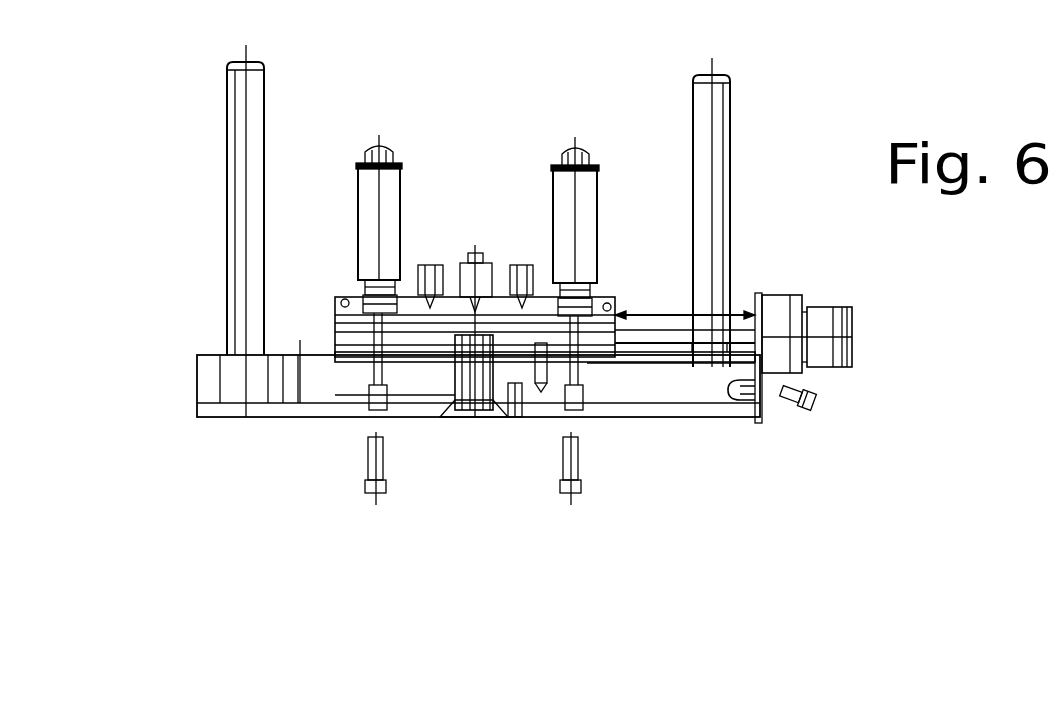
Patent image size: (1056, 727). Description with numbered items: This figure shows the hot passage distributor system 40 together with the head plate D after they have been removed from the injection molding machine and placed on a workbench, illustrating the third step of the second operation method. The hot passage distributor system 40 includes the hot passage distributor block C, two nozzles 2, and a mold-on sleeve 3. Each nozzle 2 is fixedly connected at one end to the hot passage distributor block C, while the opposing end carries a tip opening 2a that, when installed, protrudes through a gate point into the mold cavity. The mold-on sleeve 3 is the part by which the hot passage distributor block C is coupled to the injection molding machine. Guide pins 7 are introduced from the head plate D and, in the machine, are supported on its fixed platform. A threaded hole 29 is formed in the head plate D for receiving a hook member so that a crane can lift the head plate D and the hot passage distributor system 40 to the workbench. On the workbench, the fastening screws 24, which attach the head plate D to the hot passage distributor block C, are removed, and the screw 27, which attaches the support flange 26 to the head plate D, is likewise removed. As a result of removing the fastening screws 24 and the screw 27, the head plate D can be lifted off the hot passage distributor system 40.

The guide pins 7 is at (264, 64).
The hot passage distributor system 40 is at (355, 193).
The nozzles 2 is at (437, 264).
The tip opening 2a is at (563, 153).
The support flange 26 is at (753, 307).
The hot passage distributor block C is at (346, 325).
The head plate D is at (657, 388).
The mold-on sleeve 3 is at (483, 413).
The fastening screws 24 is at (377, 497).
The threaded hole 29 is at (745, 400).
The screw 27 is at (800, 407).